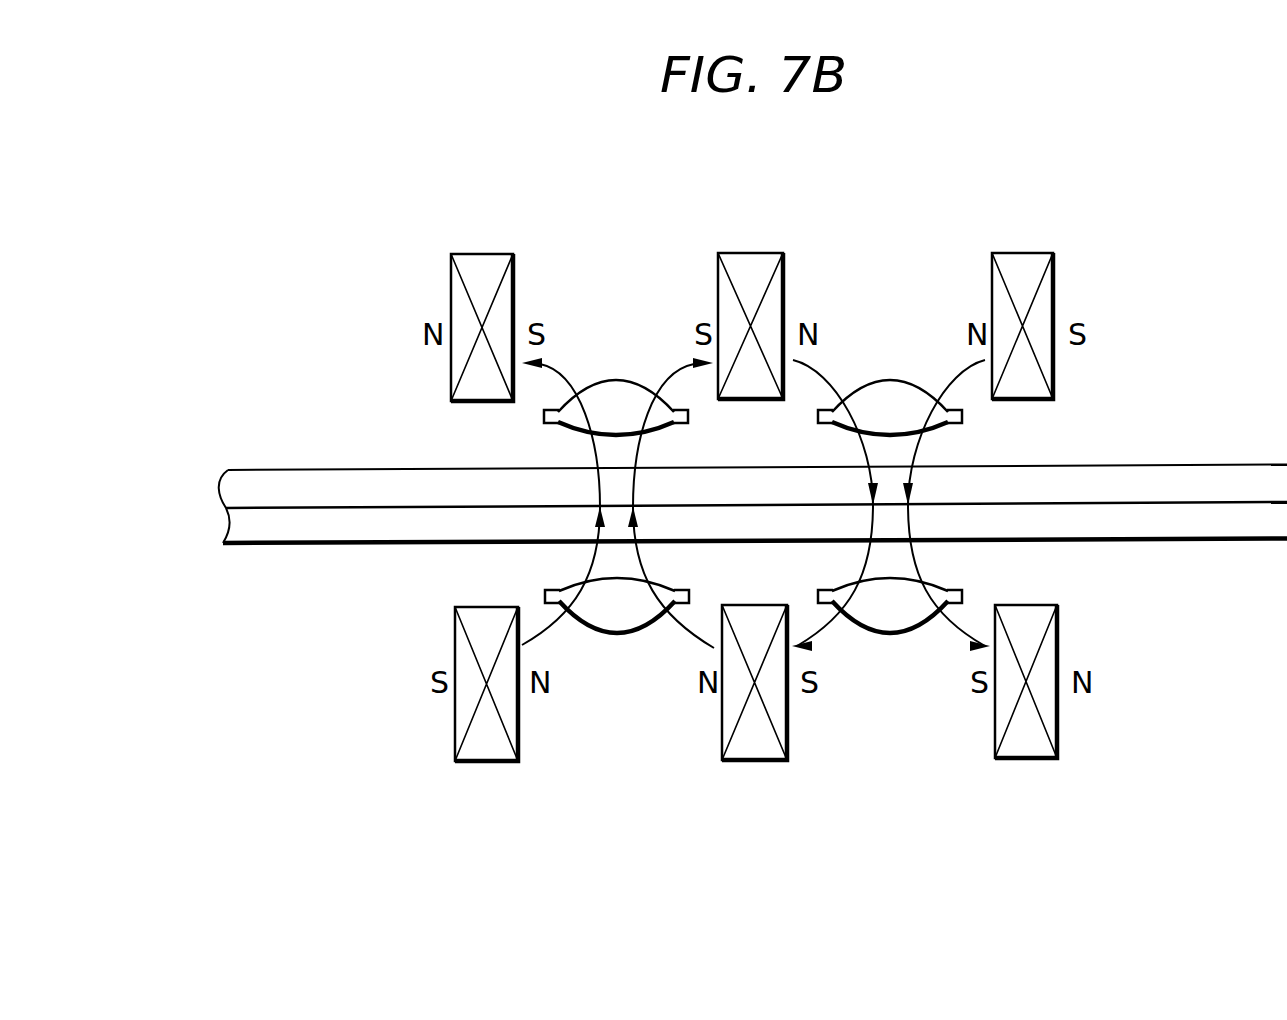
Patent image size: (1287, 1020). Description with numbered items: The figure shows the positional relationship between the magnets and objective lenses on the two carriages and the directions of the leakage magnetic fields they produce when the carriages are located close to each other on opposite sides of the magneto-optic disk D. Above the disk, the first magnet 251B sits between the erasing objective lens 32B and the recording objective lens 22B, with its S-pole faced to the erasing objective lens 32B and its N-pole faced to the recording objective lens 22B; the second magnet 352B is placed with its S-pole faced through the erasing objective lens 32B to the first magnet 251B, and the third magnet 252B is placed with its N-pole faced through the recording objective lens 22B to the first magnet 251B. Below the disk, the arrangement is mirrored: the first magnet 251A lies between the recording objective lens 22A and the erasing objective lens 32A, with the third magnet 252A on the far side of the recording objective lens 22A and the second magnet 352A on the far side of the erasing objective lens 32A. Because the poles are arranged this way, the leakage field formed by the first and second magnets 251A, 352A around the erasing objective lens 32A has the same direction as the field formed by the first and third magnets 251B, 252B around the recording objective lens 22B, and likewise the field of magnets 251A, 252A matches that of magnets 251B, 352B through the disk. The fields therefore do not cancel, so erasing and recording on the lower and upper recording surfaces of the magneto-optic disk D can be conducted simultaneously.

The magneto-optic disk D is at (274, 470).
The second magnet 352B is at (466, 255).
The erasing objective lens 32B is at (607, 393).
The first magnet 251B is at (750, 254).
The recording objective lens 22B is at (887, 392).
The third magnet 252B is at (1037, 258).
The third magnet 252A is at (455, 740).
The recording objective lens 22A is at (610, 620).
The first magnet 251A is at (742, 761).
The erasing objective lens 32A is at (882, 625).
The second magnet 352A is at (1057, 733).